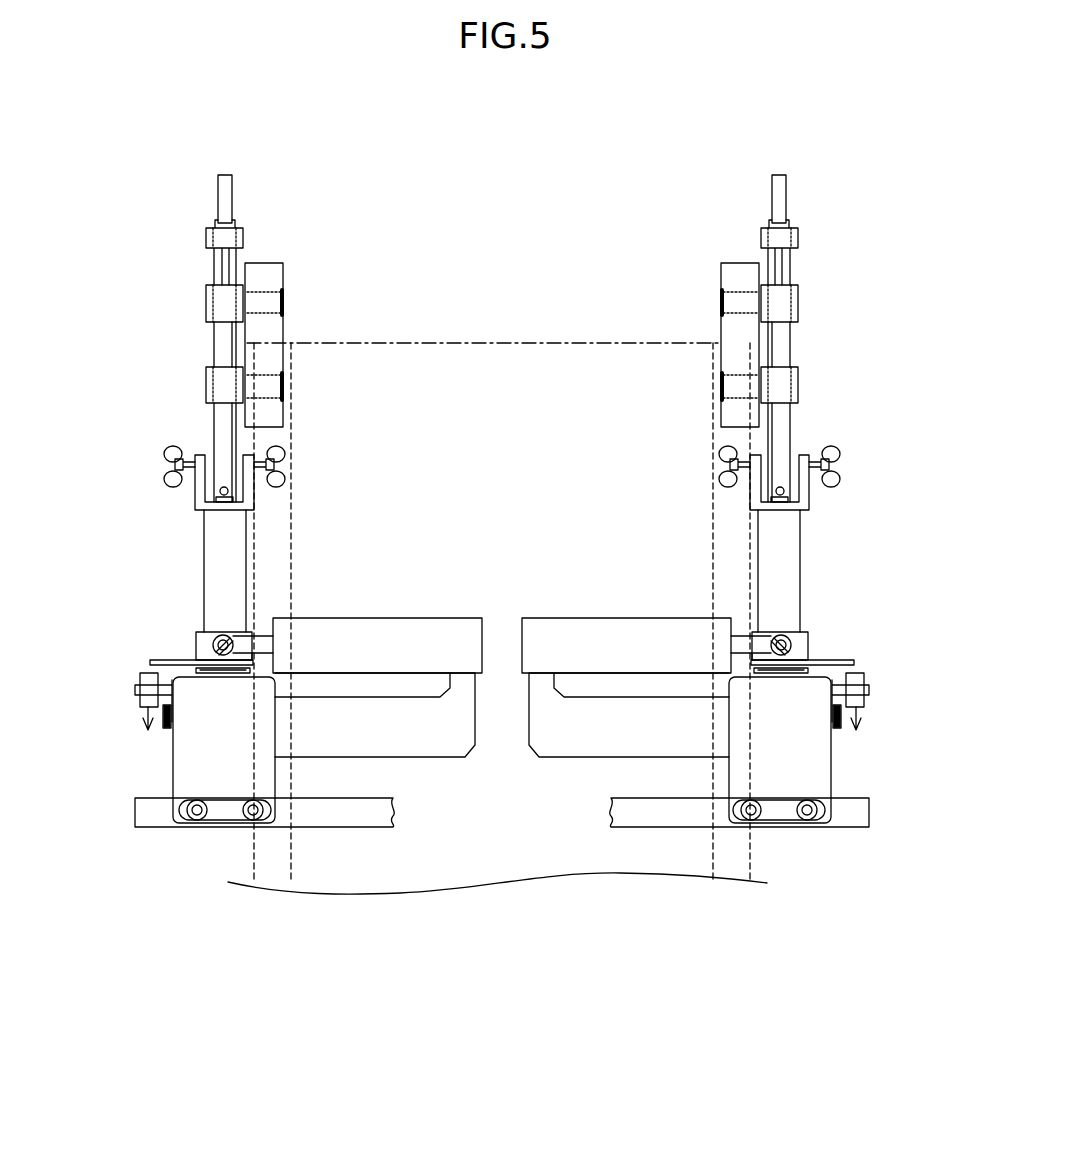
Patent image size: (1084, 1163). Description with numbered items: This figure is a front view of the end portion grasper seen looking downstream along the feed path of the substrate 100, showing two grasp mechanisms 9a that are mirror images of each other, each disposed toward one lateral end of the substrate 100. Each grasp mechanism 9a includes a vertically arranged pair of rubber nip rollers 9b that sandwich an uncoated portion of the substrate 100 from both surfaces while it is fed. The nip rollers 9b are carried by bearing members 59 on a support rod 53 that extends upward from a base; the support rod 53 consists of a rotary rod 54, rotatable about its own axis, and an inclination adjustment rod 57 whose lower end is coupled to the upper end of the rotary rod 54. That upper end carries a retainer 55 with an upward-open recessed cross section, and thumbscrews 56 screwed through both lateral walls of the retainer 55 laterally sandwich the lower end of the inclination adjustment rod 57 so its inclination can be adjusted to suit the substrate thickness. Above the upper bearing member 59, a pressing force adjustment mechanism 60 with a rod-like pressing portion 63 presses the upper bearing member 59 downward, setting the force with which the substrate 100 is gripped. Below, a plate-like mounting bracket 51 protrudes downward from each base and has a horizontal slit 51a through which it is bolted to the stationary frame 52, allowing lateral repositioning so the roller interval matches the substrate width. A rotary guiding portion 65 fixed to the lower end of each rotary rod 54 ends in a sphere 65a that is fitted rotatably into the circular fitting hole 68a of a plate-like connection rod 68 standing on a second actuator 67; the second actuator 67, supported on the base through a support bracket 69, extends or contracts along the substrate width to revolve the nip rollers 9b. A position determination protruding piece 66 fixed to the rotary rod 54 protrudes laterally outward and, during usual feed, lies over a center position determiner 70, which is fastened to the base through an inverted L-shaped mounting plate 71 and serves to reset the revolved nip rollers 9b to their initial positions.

The substrate 100 is at (500, 341).
The pressing force adjustment mechanism 60 is at (231, 164).
The pressing portion 63 is at (222, 187).
The bearing member 59 is at (222, 383).
The inclination adjustment rod 57 is at (222, 344).
The grasp mechanism 9a is at (276, 252).
The nip roller 9b is at (270, 411).
The thumbscrew 56 is at (284, 464).
The retainer 55 is at (200, 503).
The rotary rod 54 is at (218, 538).
The support rod 53 is at (195, 585).
The rotary guiding portion 65 is at (204, 634).
The sphere 65a is at (214, 644).
The position determination protruding piece 66 is at (152, 662).
The center position determiner 70 is at (140, 686).
The mounting plate 71 is at (148, 712).
The connection rod 68 is at (262, 643).
The fitting hole 68a is at (230, 675).
The second actuator 67 is at (410, 620).
The support bracket 69 is at (440, 750).
The mounting bracket 51 is at (180, 760).
The slit 51a is at (218, 816).
The stationary frame 52 is at (339, 820).